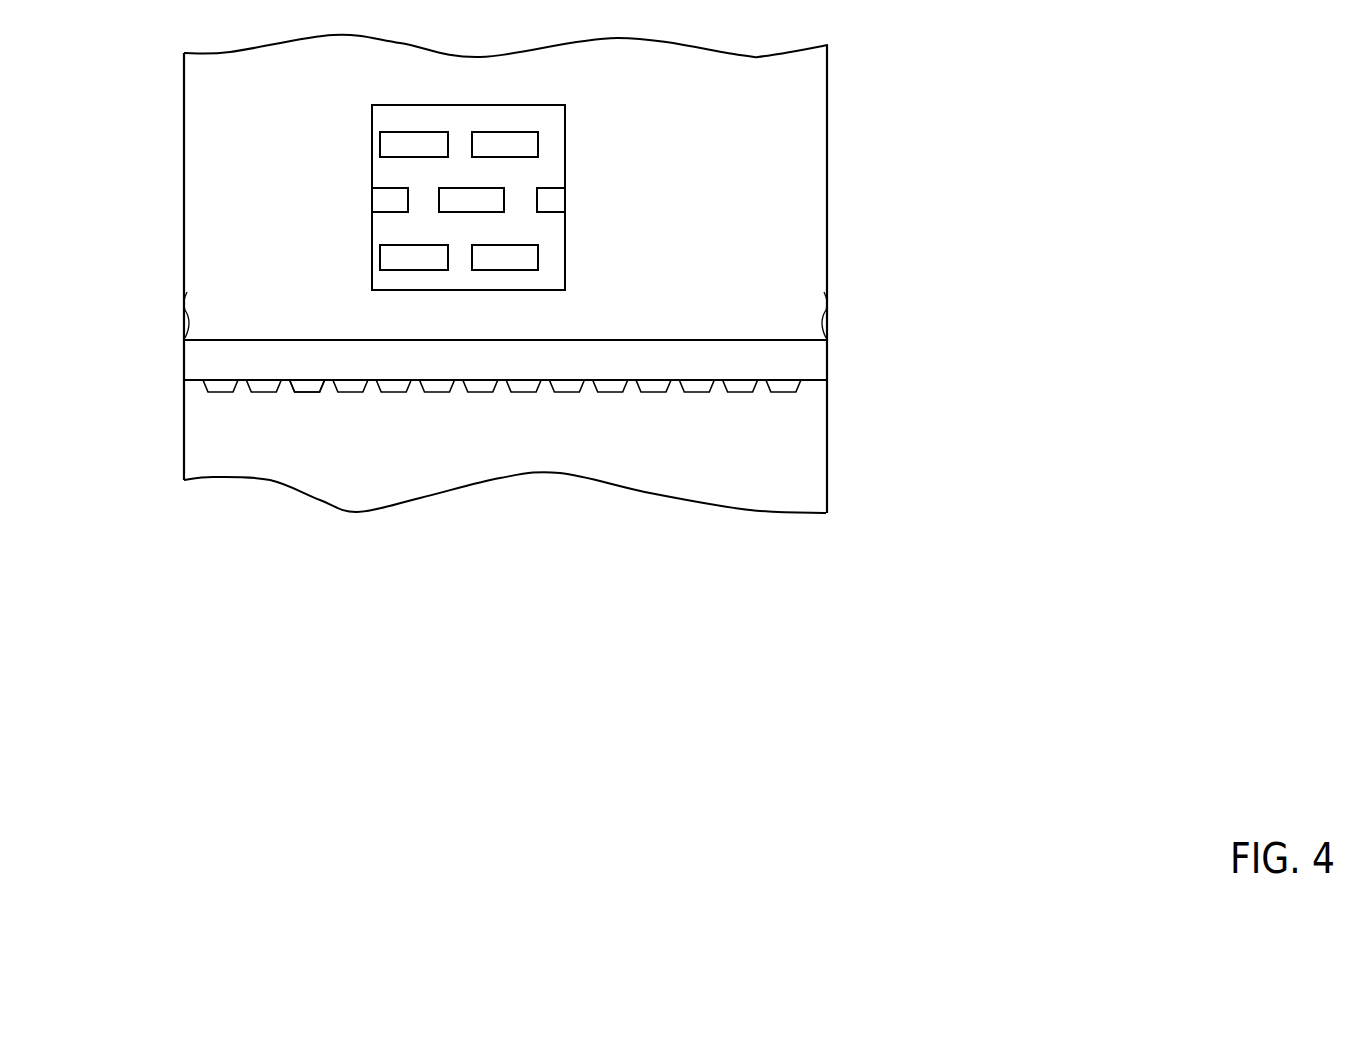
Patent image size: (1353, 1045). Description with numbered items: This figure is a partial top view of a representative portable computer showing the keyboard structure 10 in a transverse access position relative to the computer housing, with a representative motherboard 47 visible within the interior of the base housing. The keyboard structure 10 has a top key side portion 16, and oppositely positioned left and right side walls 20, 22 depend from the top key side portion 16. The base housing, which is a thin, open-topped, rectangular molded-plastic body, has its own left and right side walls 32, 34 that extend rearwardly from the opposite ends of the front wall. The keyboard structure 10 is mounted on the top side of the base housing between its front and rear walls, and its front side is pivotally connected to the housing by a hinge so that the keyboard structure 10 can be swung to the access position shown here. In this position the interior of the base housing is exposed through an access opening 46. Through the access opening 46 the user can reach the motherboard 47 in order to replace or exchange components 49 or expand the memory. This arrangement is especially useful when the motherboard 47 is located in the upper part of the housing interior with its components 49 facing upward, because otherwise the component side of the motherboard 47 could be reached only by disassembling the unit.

The keyboard structure 10 is at (284, 384).
The top key side portion 16 is at (392, 392).
The left side wall 20 is at (184, 355).
The right side wall 22 is at (827, 358).
The left side wall 32 is at (184, 176).
The right side wall 34 is at (827, 250).
The access opening 46 is at (366, 240).
The motherboard 47 is at (550, 242).
The components 49 is at (553, 192).